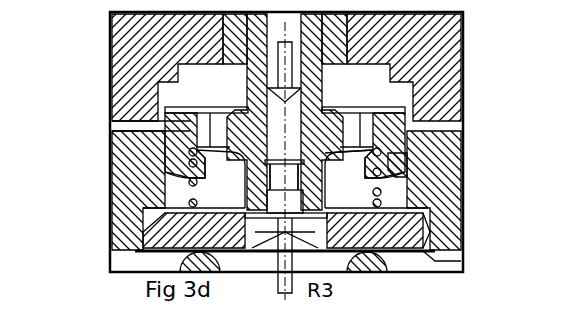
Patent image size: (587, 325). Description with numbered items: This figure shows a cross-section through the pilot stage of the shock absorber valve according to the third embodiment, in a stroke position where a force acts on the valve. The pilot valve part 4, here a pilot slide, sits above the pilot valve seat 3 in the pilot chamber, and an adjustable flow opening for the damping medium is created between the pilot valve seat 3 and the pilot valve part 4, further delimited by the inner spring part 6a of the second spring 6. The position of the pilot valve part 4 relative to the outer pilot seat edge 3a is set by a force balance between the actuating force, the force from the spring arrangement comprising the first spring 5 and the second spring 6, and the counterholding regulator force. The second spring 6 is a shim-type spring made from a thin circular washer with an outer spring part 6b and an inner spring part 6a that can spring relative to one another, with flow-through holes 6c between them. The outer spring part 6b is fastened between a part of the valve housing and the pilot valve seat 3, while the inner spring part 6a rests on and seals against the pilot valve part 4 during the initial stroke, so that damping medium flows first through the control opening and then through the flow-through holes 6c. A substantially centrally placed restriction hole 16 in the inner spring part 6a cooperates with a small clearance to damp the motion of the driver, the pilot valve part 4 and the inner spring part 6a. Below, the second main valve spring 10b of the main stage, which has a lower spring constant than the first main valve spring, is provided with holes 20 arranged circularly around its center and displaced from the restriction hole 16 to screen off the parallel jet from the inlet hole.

The pilot valve seat 3 is at (170, 236).
The outer pilot seat edge 3a is at (425, 223).
The pilot valve part 4 is at (128, 121).
The first spring 5 is at (158, 164).
The second spring 6 is at (140, 200).
The inner spring part 6a is at (335, 210).
The outer spring part 6b is at (418, 206).
The flow-through holes 6c is at (395, 187).
The second main valve spring 10b is at (137, 255).
The restriction hole 16 is at (320, 190).
The holes 20 is at (430, 260).